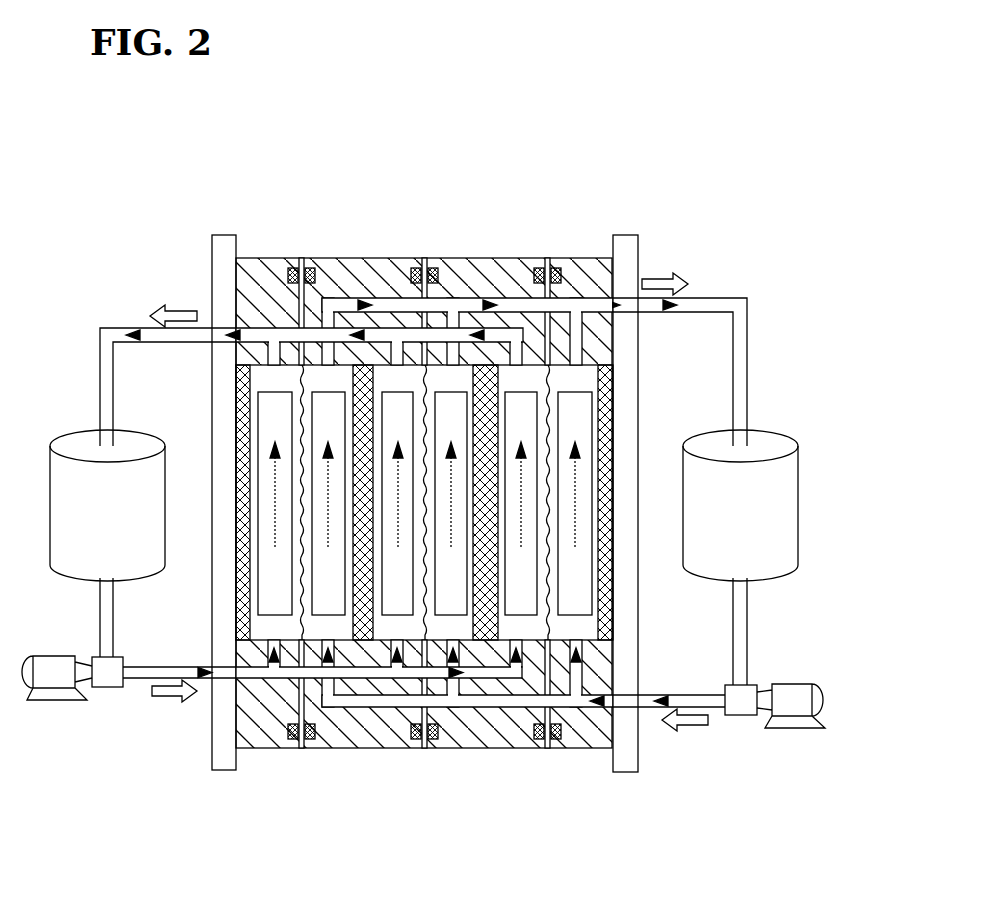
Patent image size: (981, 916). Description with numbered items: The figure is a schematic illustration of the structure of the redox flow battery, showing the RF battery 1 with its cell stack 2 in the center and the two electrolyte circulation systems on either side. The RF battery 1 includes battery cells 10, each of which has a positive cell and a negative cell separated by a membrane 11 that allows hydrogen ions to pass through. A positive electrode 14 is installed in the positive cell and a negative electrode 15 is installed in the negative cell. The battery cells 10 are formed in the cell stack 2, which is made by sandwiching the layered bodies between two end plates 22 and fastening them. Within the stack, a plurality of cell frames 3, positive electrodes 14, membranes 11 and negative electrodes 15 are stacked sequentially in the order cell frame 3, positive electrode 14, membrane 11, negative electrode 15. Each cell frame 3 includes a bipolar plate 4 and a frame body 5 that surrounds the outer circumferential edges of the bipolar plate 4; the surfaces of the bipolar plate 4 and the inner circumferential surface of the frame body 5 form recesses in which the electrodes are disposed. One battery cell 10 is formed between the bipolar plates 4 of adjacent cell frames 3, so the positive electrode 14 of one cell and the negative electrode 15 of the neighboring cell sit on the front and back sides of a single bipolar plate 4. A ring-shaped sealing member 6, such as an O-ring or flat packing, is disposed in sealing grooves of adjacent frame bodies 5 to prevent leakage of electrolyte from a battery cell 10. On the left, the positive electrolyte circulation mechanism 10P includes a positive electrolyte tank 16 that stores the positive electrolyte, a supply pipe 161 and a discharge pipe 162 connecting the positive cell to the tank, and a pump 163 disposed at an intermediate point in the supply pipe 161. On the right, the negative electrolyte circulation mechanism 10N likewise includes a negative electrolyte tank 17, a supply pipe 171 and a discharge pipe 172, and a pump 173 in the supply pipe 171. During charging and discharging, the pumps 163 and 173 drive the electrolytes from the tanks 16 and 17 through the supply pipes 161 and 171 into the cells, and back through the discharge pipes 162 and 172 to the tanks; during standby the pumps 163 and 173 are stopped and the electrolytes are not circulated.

The RF battery 1 is at (140, 196).
The cell stack 2 is at (628, 230).
The cell frame 3 is at (426, 446).
The bipolar plate 4 is at (612, 412).
The frame body 5 is at (596, 258).
The sealing member 6 is at (543, 262).
The battery cell 10 is at (527, 828).
The positive electrolyte circulation mechanism 10P is at (87, 722).
The negative electrolyte circulation mechanism 10N is at (768, 746).
The membrane 11 is at (548, 748).
The positive electrode 14 is at (527, 590).
The negative electrode 15 is at (455, 572).
The positive electrolyte tank 16 is at (60, 430).
The negative electrolyte tank 17 is at (782, 430).
The end plate 22 is at (640, 758).
The supply pipe 161 is at (142, 679).
The discharge pipe 162 is at (113, 327).
The pump 163 is at (45, 657).
The supply pipe 171 is at (708, 708).
The discharge pipe 172 is at (735, 298).
The pump 173 is at (790, 685).